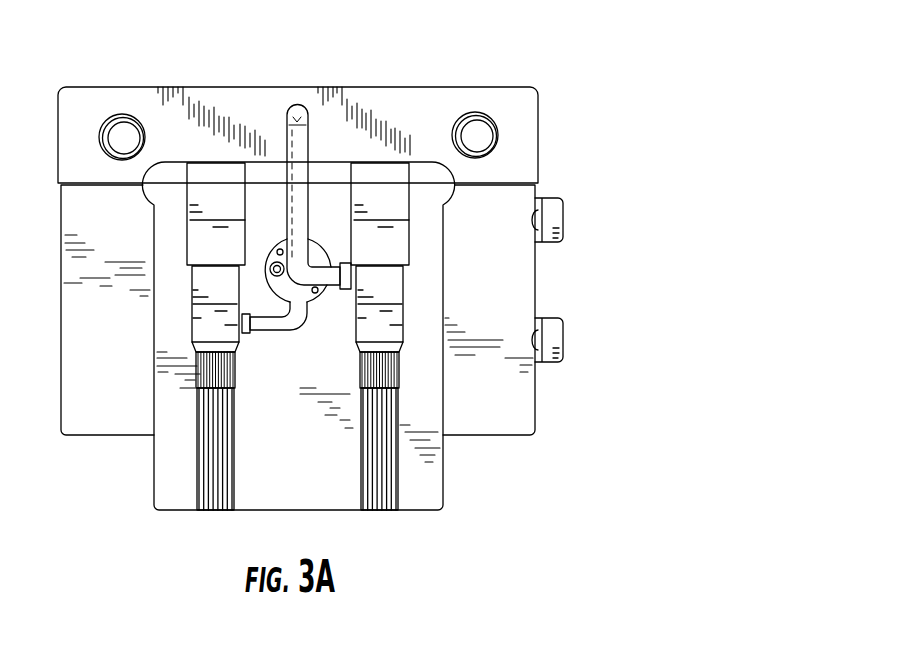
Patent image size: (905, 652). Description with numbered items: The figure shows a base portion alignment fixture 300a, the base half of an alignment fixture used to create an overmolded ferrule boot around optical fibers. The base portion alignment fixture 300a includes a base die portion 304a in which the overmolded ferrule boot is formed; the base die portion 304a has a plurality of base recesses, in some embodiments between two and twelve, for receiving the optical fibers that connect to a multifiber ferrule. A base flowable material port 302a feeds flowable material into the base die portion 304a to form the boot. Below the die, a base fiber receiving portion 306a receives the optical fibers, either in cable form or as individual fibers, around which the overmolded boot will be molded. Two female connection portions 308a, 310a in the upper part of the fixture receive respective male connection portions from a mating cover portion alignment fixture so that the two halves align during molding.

The base portion alignment fixture 300a is at (548, 180).
The base flowable material port 302a is at (305, 145).
The base die portion 304a is at (420, 260).
The base fiber receiving portion 306a is at (410, 480).
The female connection portion 308a is at (114, 106).
The female connection portion 310a is at (490, 106).